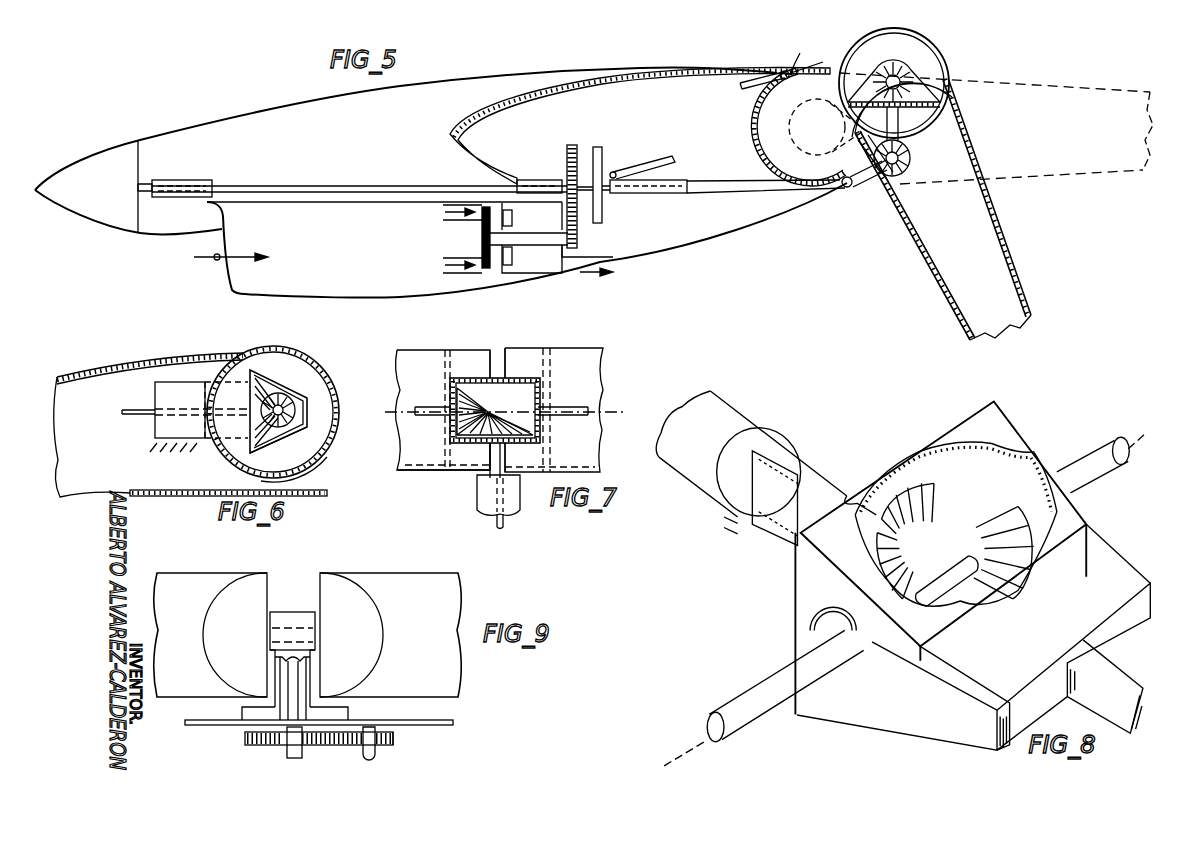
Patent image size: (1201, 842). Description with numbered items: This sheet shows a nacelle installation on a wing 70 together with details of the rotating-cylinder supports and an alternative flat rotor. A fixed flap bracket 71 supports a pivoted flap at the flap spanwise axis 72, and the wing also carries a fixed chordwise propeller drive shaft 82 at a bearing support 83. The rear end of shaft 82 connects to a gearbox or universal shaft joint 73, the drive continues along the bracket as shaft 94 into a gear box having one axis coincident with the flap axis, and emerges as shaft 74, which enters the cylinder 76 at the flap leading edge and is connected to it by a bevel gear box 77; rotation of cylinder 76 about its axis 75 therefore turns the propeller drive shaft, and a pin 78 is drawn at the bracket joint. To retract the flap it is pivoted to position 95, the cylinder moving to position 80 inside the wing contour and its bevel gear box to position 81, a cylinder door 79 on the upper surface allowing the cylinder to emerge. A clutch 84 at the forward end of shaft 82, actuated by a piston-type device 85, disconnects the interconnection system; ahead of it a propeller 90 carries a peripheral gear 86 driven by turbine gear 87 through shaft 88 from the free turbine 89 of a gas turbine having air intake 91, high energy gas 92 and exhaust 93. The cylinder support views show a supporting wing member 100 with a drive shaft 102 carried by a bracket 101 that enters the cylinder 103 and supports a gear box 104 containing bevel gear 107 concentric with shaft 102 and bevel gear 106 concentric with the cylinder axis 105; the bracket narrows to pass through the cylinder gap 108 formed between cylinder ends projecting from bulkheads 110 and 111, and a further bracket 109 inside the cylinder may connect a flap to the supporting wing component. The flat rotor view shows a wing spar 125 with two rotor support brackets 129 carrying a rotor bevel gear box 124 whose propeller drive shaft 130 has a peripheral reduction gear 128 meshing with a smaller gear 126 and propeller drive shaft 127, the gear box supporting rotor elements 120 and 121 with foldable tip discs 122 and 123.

In FIG. 5, the wing 70 is at (683, 72).
In FIG. 5, the fixed flap bracket 71 is at (886, 196).
In FIG. 5, the flap spanwise axis 72 is at (903, 173).
In FIG. 5, the gearbox or universal shaft joint 73 is at (1003, 230).
In FIG. 5, the shaft 74 is at (907, 134).
In FIG. 5, the cylinder axis 75 is at (900, 79).
In FIG. 5, the cylinder 76 is at (913, 29).
In FIG. 5, the bevel gear box 77 is at (927, 97).
In FIG. 5, the pivot pin 78 is at (840, 185).
In FIG. 5, the cylinder door 79 is at (782, 70).
In FIG. 5, the cylinder retracted position 80 is at (800, 53).
In FIG. 5, the bevel gear box retracted position 81 is at (823, 62).
In FIG. 5, the propeller drive shaft 82 is at (728, 190).
In FIG. 5, the bearing support 83 is at (676, 182).
In FIG. 5, the clutch 84 is at (598, 146).
In FIG. 5, the piston-type device 85 is at (663, 158).
In FIG. 5, the peripheral gear 86 is at (570, 146).
In FIG. 5, the turbine gear 87 is at (580, 248).
In FIG. 5, the shaft 88 is at (560, 255).
In FIG. 5, the free turbine 89 is at (484, 270).
In FIG. 5, the propeller 90 is at (240, 182).
In FIG. 5, the air intake 91 is at (217, 260).
In FIG. 5, the high energy gas 92 is at (447, 262).
In FIG. 5, the exhaust 93 is at (590, 276).
In FIG. 5, the shaft 94 is at (862, 187).
In FIG. 5, the flap retracted position 95 is at (1090, 78).
In FIG. 6, the supporting wing member 100 is at (140, 357).
In FIG. 6, the bracket 101 is at (193, 382).
In FIG. 7, the bracket 101 is at (480, 497).
In FIG. 8, the bracket 101 is at (735, 415).
In FIG. 6, the drive shaft 102 is at (133, 402).
In FIG. 7, the drive shaft 102 is at (503, 523).
In FIG. 8, the drive shaft 102 is at (730, 510).
In FIG. 6, the cylinder 103 is at (303, 354).
In FIG. 7, the cylinder 103 is at (420, 472).
In FIG. 6, the gear box 104 is at (267, 370).
In FIG. 7, the gear box 104 is at (532, 378).
In FIG. 8, the gear box 104 is at (1002, 432).
In FIG. 6, the cylinder axis 105 is at (293, 405).
In FIG. 7, the cylinder axis 105 is at (615, 412).
In FIG. 8, the cylinder axis 105 is at (683, 733).
In FIG. 6, the bevel gear 106 is at (307, 420).
In FIG. 7, the bevel gear 106 is at (470, 392).
In FIG. 8, the bevel gear 106 is at (1010, 497).
In FIG. 6, the bevel gear 107 is at (263, 440).
In FIG. 7, the bevel gear 107 is at (530, 425).
In FIG. 8, the bevel gear 107 is at (930, 482).
In FIG. 7, the cylinder gap 108 is at (498, 353).
In FIG. 8, the bracket 109 is at (927, 700).
In FIG. 7, the bulkhead 110 is at (445, 365).
In FIG. 7, the bulkhead 111 is at (570, 345).
In FIG. 9, the rotor element 120 is at (150, 590).
In FIG. 9, the rotor element 121 is at (463, 588).
In FIG. 9, the foldable tip disc 122 is at (217, 598).
In FIG. 9, the foldable tip disc 123 is at (360, 590).
In FIG. 9, the rotor bevel gear box 124 is at (283, 612).
In FIG. 9, the wing spar 125 is at (437, 720).
In FIG. 9, the smaller gear 126 is at (395, 739).
In FIG. 9, the propeller drive shaft 127 is at (375, 755).
In FIG. 9, the peripheral reduction gear 128 is at (245, 740).
In FIG. 9, the rotor support brackets 129 is at (242, 713).
In FIG. 9, the propeller drive shaft 130 is at (287, 752).